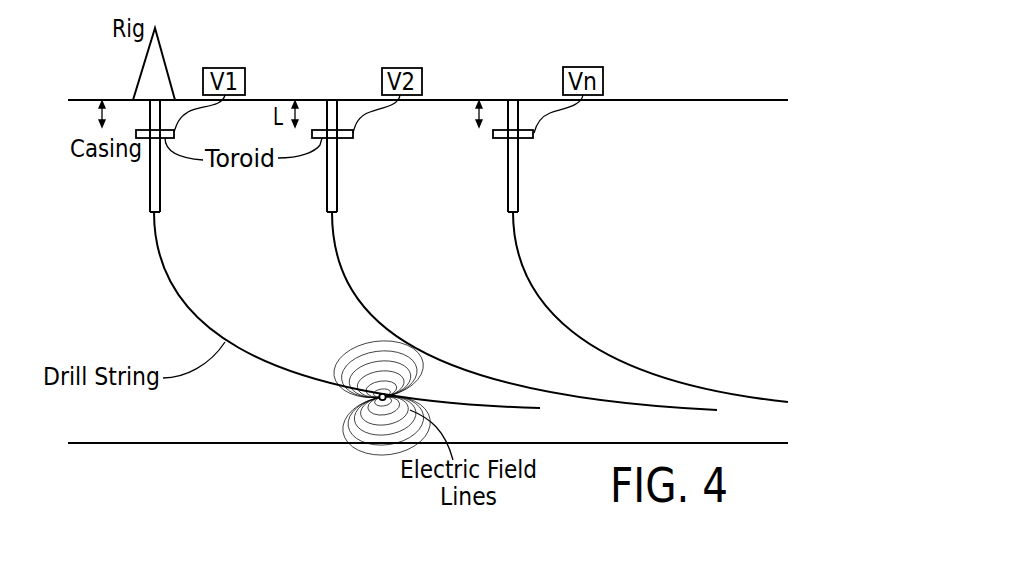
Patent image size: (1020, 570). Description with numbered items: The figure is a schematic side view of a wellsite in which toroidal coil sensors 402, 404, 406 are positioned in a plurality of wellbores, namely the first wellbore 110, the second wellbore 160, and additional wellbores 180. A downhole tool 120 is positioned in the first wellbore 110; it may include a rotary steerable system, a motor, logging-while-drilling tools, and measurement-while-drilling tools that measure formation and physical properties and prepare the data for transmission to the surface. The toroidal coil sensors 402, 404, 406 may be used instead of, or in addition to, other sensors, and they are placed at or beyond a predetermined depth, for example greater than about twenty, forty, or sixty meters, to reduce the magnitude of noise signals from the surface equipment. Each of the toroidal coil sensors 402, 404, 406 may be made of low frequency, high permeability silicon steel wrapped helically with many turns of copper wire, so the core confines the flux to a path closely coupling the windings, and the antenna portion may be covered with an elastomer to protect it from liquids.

The first wellbore 110 is at (308, 254).
The second wellbore 160 is at (485, 255).
The additional wellbores 180 is at (601, 251).
The downhole tool 120 is at (382, 400).
The toroidal coil sensor 402 is at (146, 129).
The toroidal coil sensor 404 is at (322, 129).
The toroidal coil sensor 406 is at (505, 129).